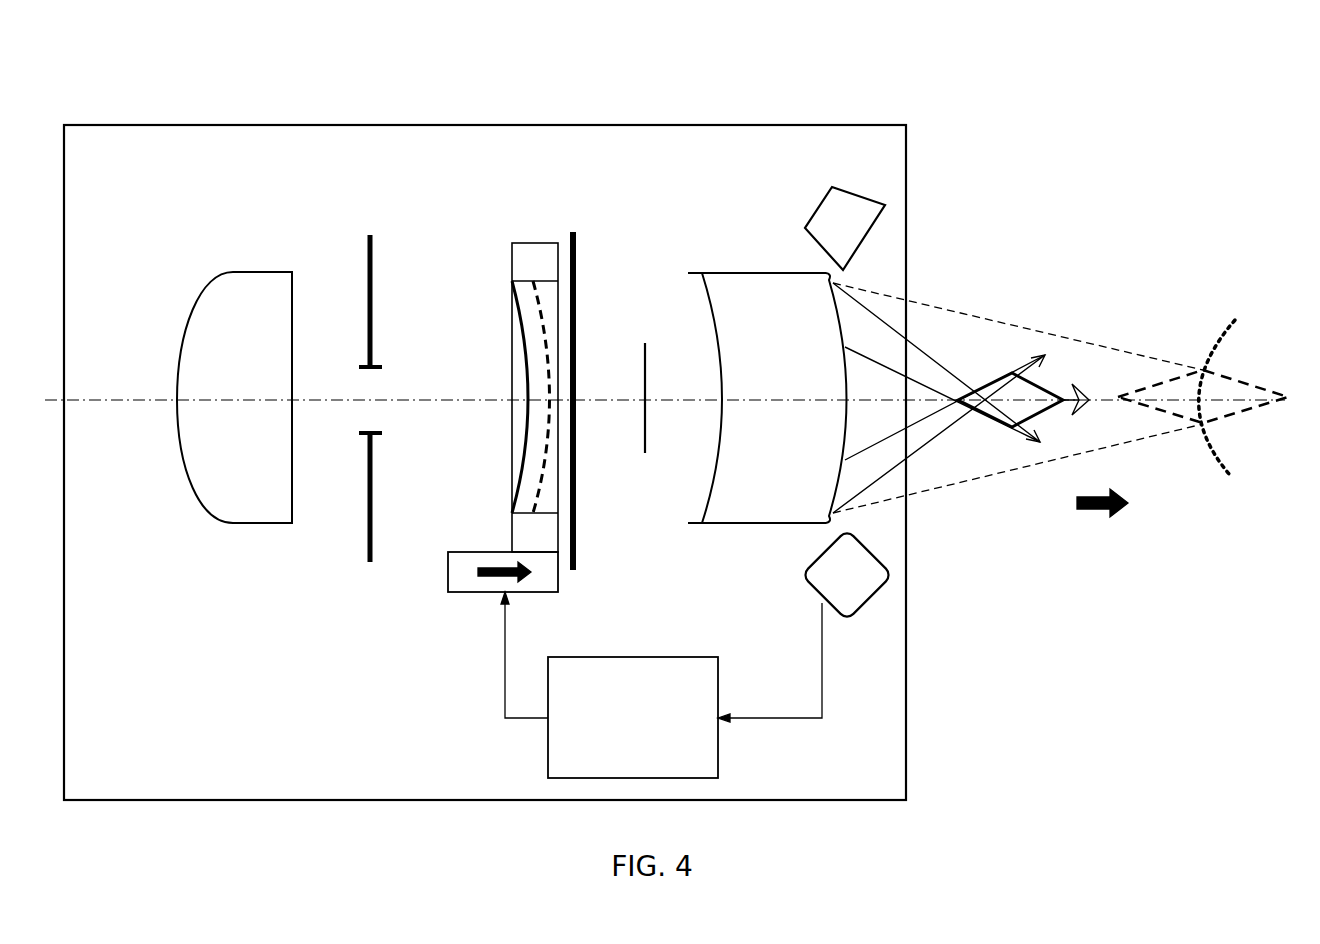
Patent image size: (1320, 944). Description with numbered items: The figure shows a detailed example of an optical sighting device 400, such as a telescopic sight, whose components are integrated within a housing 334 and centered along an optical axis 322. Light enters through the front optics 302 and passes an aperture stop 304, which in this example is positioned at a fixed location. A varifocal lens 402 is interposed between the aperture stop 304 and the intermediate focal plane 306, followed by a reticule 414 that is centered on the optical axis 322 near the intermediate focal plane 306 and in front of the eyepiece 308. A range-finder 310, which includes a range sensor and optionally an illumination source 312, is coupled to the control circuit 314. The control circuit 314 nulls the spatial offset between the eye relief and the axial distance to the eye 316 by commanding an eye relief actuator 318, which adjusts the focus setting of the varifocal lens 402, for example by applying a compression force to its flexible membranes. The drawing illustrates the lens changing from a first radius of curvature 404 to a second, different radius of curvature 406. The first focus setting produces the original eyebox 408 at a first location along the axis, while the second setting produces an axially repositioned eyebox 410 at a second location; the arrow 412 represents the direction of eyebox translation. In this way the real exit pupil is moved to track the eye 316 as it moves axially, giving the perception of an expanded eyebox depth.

The optical sighting device 400 is at (1018, 99).
The housing 334 is at (562, 113).
The optical axis 322 is at (110, 381).
The front optics 302 is at (227, 534).
The aperture stop 304 is at (360, 215).
The varifocal lens 402 is at (510, 220).
The first radius of curvature 404 is at (508, 357).
The second radius of curvature 406 is at (531, 441).
The eye relief actuator 318 is at (456, 603).
The intermediate focal plane 306 is at (585, 264).
The reticule 414 is at (648, 323).
The eyepiece 308 is at (766, 261).
The illumination source 312 is at (856, 183).
The range-finder 310 is at (889, 606).
The control circuit 314 is at (641, 644).
The original eyebox 408 is at (998, 343).
The axially repositioned eyebox 410 is at (1203, 338).
The eye 316 is at (1231, 397).
The arrow 412 is at (1097, 515).